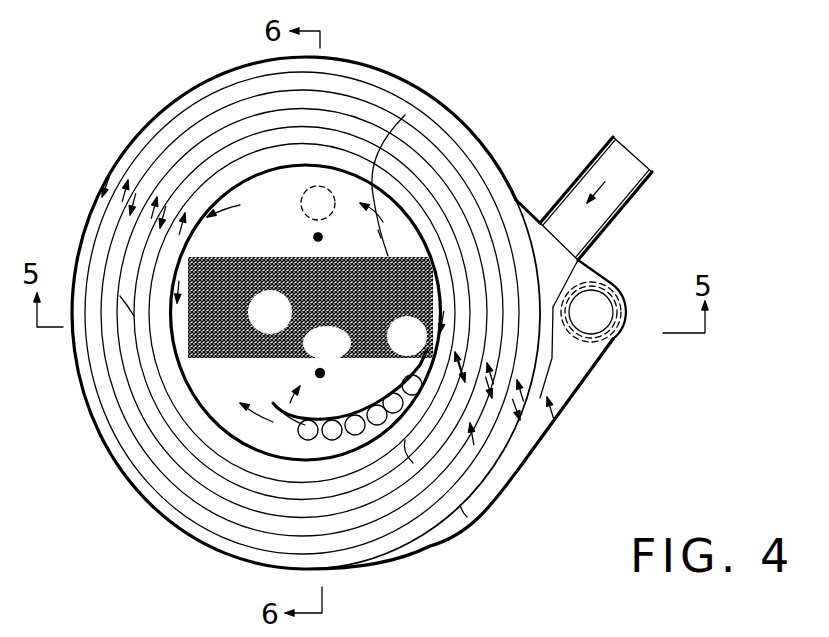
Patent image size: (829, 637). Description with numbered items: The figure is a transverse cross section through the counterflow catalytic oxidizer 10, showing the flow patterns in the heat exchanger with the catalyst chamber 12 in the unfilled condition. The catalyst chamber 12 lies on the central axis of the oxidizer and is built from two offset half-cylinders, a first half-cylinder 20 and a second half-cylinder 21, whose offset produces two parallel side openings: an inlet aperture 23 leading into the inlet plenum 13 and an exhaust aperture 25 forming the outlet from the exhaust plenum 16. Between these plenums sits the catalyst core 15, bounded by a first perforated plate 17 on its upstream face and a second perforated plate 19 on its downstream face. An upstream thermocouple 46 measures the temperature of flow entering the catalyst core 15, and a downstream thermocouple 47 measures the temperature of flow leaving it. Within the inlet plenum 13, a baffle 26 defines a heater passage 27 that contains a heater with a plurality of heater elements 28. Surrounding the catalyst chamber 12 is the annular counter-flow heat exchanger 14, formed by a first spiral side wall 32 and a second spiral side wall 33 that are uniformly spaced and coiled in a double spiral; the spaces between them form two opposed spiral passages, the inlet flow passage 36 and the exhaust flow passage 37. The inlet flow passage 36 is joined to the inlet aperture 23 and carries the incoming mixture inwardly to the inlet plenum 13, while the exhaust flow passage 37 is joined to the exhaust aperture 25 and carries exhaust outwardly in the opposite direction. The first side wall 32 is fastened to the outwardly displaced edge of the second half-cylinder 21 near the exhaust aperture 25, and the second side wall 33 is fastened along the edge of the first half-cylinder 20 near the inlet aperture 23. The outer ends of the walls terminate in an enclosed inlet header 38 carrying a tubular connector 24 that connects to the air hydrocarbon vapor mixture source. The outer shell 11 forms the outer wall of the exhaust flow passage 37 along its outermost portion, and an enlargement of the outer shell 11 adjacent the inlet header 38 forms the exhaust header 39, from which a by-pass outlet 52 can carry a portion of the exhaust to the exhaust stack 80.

The counterflow catalytic oxidizer 10 is at (75, 189).
The outer shell 11 is at (500, 168).
The catalyst chamber 12 is at (327, 164).
The inlet plenum 13 is at (305, 382).
The annular counter-flow heat exchanger 14 is at (417, 90).
The catalyst core 15 is at (467, 153).
The exhaust plenum 16 is at (268, 243).
The first perforated plate 17 is at (260, 360).
The second perforated plate 19 is at (264, 257).
The first half-cylinder 20 is at (303, 447).
The second half-cylinder 21 is at (445, 120).
The inlet aperture 23 is at (408, 338).
The tubular connector 24 is at (618, 143).
The exhaust aperture 25 is at (215, 230).
The baffle 26 is at (398, 378).
The heater passage 27 is at (372, 398).
The heater elements 28 is at (285, 395).
The first spiral side wall 32 is at (407, 520).
The second spiral side wall 33 is at (467, 517).
The inlet flow passage 36 is at (180, 388).
The exhaust flow passage 37 is at (78, 307).
The inlet header 38 is at (567, 271).
The exhaust header 39 is at (580, 371).
The upstream thermocouple 46 is at (338, 345).
The downstream thermocouple 47 is at (320, 238).
The by-pass outlet 52 is at (304, 197).
The exhaust stack 80 is at (593, 283).